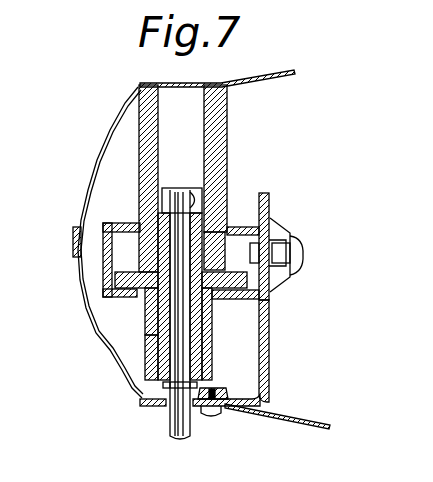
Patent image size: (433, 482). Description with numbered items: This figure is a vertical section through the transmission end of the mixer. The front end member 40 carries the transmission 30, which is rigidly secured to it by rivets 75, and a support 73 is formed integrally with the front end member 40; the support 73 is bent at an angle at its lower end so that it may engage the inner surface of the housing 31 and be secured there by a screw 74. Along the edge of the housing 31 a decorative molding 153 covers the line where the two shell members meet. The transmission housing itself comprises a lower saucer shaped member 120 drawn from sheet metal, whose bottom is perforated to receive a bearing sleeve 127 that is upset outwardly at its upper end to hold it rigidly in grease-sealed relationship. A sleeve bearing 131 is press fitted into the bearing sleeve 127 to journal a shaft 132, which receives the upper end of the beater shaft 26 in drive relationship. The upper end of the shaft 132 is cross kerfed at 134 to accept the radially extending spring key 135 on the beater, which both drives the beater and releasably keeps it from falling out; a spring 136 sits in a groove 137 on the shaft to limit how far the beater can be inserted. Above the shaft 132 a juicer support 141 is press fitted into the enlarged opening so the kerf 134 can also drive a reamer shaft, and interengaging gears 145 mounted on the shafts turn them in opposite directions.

The beater shaft 26 is at (173, 427).
The transmission 30 is at (100, 291).
The housing 31 is at (268, 414).
The front end member 40 is at (266, 193).
The support 73 is at (264, 378).
The screw 74 is at (208, 412).
The rivets 75 is at (274, 232).
The saucer shaped member 120 is at (106, 244).
The bearing sleeve 127 is at (162, 353).
The sleeve bearing 131 is at (152, 358).
The shaft 132 is at (198, 348).
The cross kerf 134 is at (165, 198).
The spring key 135 is at (223, 178).
The spring 136 is at (167, 389).
The groove 137 is at (175, 392).
The juicer support 141 is at (138, 118).
The interengaging gears 145 is at (147, 333).
The decorative molding 153 is at (73, 235).